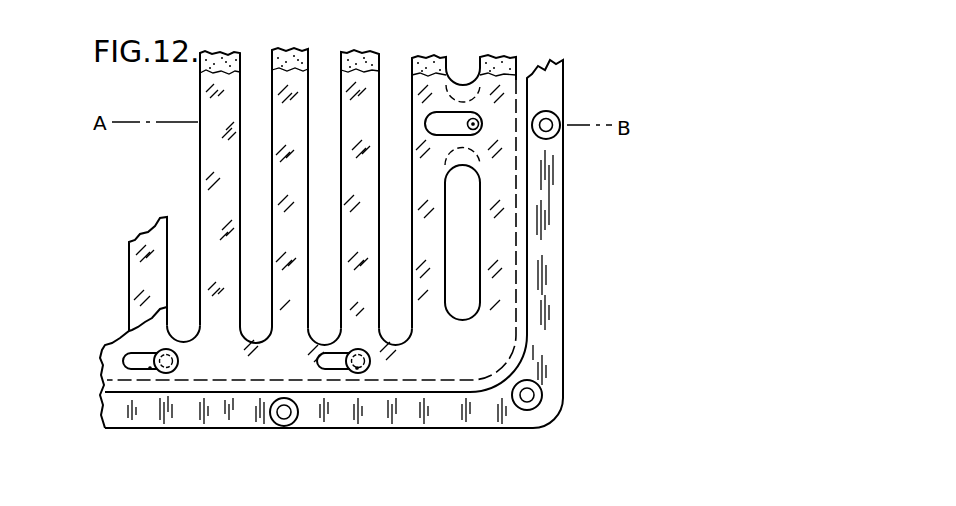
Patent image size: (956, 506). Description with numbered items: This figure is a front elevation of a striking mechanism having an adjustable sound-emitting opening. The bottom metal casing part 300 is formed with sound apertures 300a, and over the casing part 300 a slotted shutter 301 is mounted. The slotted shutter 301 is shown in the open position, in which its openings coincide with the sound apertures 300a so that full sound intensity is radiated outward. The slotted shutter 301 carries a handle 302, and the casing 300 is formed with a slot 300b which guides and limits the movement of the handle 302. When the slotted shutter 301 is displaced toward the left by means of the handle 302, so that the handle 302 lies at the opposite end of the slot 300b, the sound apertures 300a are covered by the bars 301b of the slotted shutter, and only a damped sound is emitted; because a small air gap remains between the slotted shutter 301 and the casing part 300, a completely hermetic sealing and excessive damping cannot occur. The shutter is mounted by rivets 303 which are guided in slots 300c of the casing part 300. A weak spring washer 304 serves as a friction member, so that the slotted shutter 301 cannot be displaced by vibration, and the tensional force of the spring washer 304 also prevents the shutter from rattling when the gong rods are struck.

The bottom metal casing part 300 is at (536, 258).
The sound apertures 300a is at (395, 313).
The slot 300b is at (437, 127).
The slots 300c is at (139, 364).
The slotted shutter 301 is at (498, 65).
The bars 301b is at (288, 60).
The handle 302 is at (479, 122).
The rivets 303 is at (170, 367).
The spring washer 304 is at (150, 368).